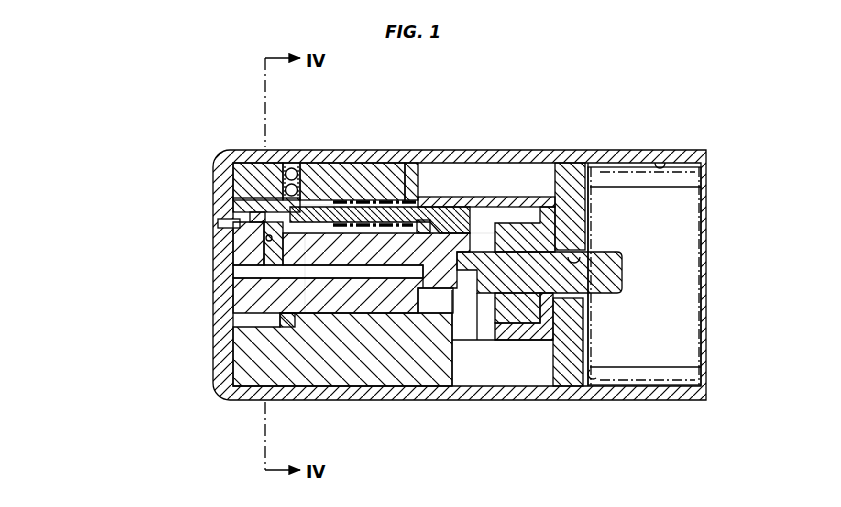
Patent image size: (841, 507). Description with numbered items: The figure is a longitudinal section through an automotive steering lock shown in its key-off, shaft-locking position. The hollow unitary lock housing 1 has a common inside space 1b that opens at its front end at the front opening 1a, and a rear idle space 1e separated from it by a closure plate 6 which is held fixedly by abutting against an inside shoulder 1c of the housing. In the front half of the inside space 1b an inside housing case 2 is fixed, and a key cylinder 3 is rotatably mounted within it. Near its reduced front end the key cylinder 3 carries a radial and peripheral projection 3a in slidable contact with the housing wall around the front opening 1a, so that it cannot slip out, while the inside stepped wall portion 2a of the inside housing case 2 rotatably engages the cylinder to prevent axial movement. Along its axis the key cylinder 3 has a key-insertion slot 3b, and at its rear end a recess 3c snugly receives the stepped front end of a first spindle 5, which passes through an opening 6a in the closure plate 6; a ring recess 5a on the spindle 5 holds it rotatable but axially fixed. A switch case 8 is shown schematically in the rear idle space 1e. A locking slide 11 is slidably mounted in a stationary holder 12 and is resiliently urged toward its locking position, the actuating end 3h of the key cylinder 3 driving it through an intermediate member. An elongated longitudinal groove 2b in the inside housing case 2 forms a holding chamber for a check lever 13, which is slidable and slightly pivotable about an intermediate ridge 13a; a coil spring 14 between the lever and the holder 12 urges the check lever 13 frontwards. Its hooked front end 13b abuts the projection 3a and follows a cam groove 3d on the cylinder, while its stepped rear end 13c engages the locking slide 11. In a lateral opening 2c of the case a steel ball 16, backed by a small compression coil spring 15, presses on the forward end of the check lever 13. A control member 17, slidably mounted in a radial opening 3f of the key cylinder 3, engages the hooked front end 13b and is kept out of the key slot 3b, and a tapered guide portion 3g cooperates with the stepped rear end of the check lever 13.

The lock housing 1 is at (545, 160).
The front opening 1a is at (228, 312).
The inside space 1b is at (506, 165).
The inside shoulder 1c is at (594, 380).
The rear idle space 1e is at (660, 163).
The inside housing case 2 is at (362, 185).
The inside stepped wall portion 2a is at (288, 328).
The longitudinal groove 2b is at (233, 205).
The lateral opening 2c is at (296, 168).
The key cylinder 3 is at (374, 300).
The radial and peripheral projection 3a is at (240, 224).
The key-insertion slot 3b is at (233, 275).
The recess 3c is at (468, 290).
The cam groove 3d is at (262, 214).
The radial opening 3f is at (266, 238).
The tapered guide portion 3g is at (262, 190).
The actuating end 3h is at (472, 225).
The first spindle 5 is at (610, 270).
The ring recess 5a is at (575, 310).
The closure plate 6 is at (568, 183).
The opening 6a is at (585, 265).
The switch case 8 is at (692, 322).
The locking slide 11 is at (525, 386).
The stationary holder 12 is at (537, 386).
The check lever 13 is at (421, 215).
The ridge 13a is at (326, 224).
The front end 13b is at (283, 180).
The rear end 13c is at (462, 230).
The coil spring 14 is at (414, 207).
The compression coil spring 15 is at (288, 168).
The steel ball 16 is at (316, 208).
The control member 17 is at (233, 272).